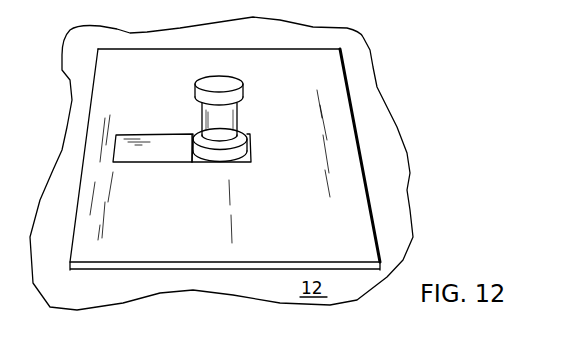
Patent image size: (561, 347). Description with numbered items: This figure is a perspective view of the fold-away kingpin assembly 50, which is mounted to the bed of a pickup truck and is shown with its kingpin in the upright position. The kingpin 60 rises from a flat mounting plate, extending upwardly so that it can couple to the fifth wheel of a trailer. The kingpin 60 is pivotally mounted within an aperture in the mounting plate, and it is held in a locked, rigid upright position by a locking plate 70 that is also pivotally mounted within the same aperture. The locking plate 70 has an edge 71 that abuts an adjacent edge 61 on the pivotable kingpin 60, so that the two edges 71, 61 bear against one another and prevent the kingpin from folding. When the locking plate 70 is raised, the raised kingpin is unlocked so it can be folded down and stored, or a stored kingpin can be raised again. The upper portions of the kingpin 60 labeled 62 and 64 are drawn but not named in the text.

The fold-away kingpin assembly 50 is at (383, 187).
The kingpin 60 is at (229, 109).
The edge 61 is at (197, 137).
The shank 62 is at (227, 123).
The head cap 64 is at (196, 100).
The locking plate 70 is at (163, 153).
The edge 71 is at (196, 143).